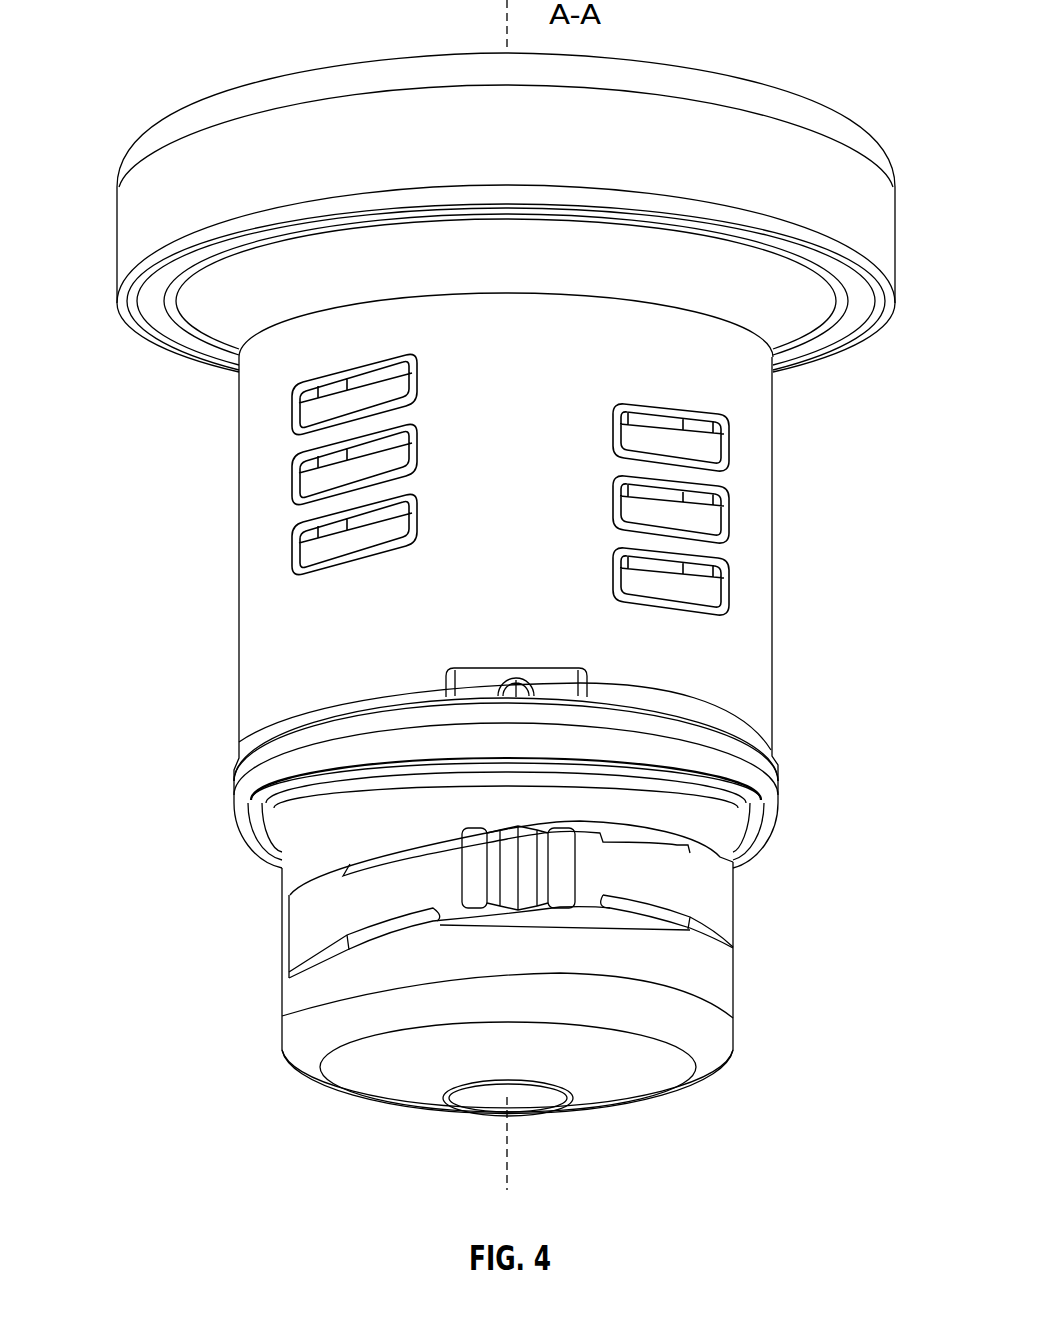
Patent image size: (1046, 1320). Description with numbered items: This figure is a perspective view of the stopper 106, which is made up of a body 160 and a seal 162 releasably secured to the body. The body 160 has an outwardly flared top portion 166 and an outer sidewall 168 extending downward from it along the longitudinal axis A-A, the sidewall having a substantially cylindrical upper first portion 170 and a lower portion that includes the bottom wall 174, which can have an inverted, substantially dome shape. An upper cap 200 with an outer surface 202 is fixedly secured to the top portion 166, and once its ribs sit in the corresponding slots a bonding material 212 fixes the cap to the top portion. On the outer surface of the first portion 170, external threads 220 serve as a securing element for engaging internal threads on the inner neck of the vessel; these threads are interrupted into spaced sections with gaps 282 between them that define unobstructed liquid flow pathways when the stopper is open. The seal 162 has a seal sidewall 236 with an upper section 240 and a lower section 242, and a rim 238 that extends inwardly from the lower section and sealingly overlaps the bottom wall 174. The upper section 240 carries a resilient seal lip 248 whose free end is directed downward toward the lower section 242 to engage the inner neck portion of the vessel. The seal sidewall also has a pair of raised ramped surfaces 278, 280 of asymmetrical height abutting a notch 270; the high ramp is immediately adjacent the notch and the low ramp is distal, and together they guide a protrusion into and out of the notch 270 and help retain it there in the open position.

The stopper 106 is at (138, 46).
The upper cap 200 is at (877, 186).
The outer surface 202 is at (122, 190).
The bonding material 212 is at (158, 314).
The top portion 166 is at (810, 289).
The first portion 170 is at (762, 470).
The gaps 282 is at (507, 430).
The outer sidewall 168 is at (250, 656).
The external threads 220 is at (295, 483).
The body 160 is at (762, 692).
The seal lip 248 is at (257, 792).
The upper section 240 is at (724, 834).
The seal 162 is at (727, 972).
The lower section 242 is at (290, 997).
The seal sidewall 236 is at (288, 860).
The raised ramped surface 278 is at (385, 873).
The raised ramped surface 280 is at (722, 900).
The notch 270 is at (510, 888).
The rim 238 is at (643, 1092).
The bottom wall 174 is at (472, 1100).